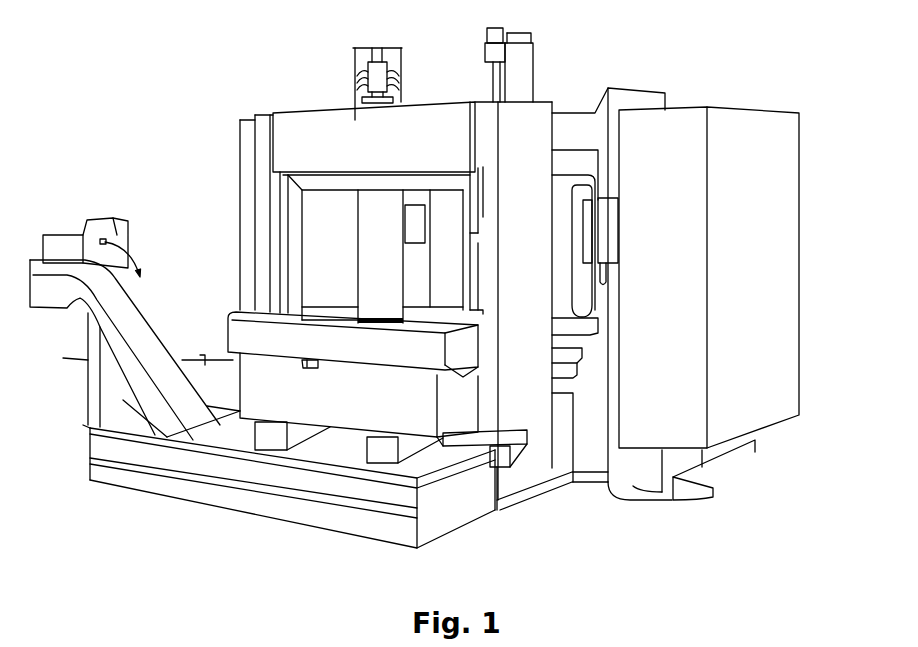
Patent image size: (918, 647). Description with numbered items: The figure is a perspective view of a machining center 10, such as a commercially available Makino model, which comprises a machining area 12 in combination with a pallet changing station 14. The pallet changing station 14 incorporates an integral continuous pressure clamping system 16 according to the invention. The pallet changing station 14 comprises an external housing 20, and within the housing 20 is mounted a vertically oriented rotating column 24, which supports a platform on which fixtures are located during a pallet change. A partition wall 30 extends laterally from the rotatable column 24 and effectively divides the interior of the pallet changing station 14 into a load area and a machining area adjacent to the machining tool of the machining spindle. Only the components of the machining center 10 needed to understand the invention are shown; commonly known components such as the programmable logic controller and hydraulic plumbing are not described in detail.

The machining center 10 is at (183, 30).
The machining area 12 is at (611, 84).
The pallet changing station 14 is at (289, 107).
The integral continuous pressure clamping system 16 is at (351, 48).
The external housing 20 is at (446, 100).
The rotating column 24 is at (381, 247).
The partition wall 30 is at (332, 252).